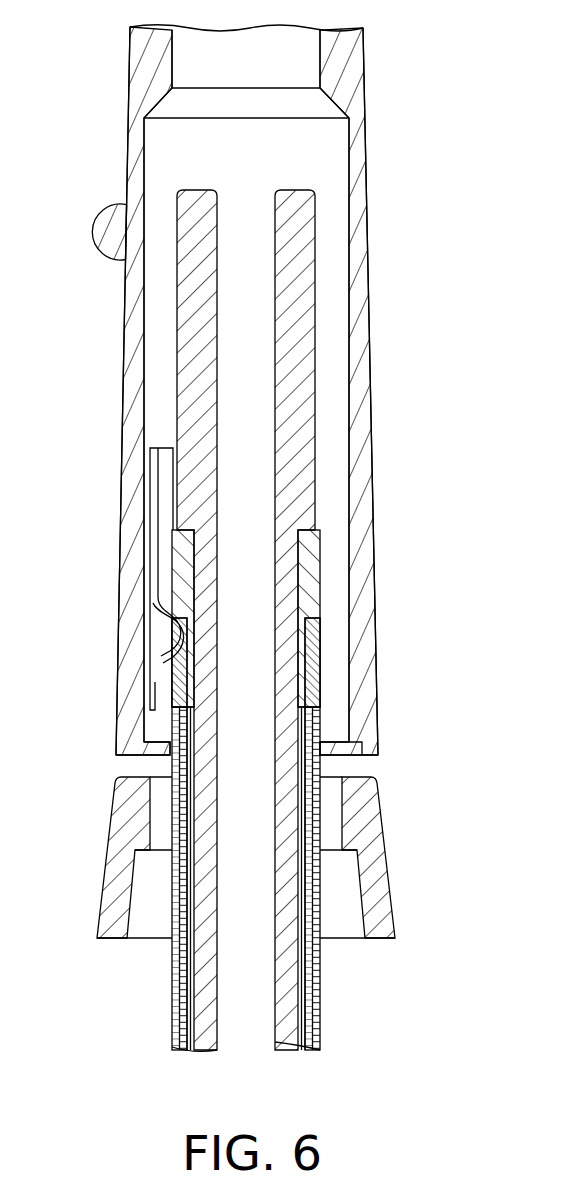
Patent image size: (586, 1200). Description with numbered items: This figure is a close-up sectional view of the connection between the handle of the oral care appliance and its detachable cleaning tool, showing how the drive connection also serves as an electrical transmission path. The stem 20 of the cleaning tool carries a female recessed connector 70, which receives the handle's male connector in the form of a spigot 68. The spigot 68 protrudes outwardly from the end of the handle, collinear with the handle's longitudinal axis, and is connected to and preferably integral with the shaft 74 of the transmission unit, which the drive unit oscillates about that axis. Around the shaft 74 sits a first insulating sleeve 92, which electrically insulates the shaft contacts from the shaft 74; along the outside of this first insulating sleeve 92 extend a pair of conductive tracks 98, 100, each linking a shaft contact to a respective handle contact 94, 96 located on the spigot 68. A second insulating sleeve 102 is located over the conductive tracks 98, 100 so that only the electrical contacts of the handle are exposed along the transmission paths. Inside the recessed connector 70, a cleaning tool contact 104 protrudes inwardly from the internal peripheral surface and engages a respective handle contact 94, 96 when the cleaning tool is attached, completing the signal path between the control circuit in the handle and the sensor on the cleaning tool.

The stem 20 is at (146, 57).
The recessed connector 70 is at (332, 165).
The spigot 68 is at (300, 408).
The handle contact 94 is at (182, 682).
The handle contact 96 is at (313, 682).
The cleaning tool contact 104 is at (176, 632).
The second insulating sleeve 102 is at (322, 1025).
The first insulating sleeve 92 is at (293, 968).
The conductive track 98 is at (178, 913).
The conductive track 100 is at (310, 795).
The shaft 74 is at (287, 1038).